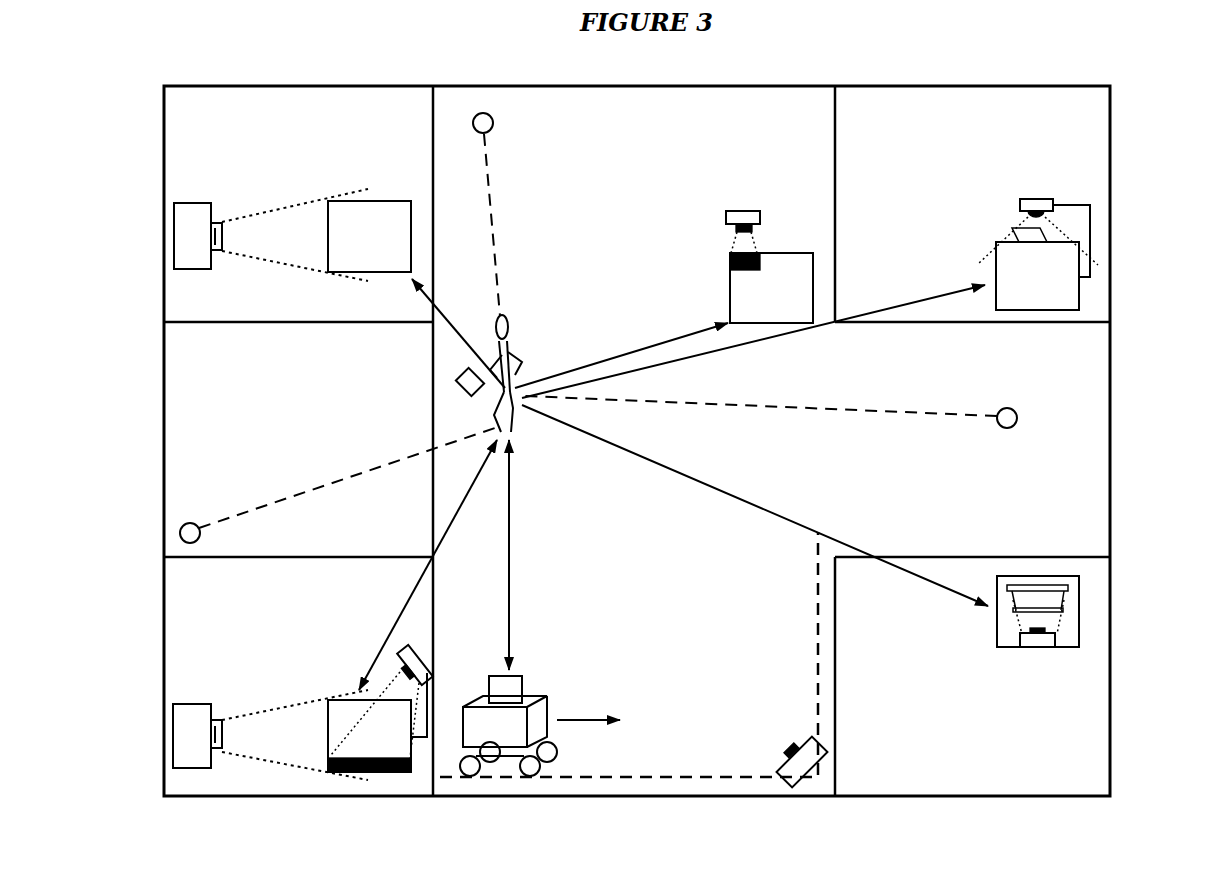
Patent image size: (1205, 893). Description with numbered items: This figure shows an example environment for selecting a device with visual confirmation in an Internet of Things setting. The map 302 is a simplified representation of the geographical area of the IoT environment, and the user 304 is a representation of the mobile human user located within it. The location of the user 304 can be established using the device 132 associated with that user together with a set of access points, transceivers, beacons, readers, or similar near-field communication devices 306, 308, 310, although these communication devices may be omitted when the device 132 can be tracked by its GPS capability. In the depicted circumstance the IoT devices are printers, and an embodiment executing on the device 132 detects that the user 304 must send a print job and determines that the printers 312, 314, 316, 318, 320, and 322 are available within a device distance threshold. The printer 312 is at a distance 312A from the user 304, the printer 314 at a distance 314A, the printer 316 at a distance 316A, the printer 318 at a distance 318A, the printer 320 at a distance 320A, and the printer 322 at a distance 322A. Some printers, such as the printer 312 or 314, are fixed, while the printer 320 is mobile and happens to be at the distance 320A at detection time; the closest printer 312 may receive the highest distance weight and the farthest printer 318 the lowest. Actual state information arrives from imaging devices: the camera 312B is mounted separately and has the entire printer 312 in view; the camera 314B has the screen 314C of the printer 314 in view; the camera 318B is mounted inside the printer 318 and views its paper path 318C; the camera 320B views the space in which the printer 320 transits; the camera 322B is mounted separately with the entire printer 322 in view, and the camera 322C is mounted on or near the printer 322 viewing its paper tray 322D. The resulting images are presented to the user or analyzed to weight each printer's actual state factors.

The map 302 is at (1076, 86).
The user 304 is at (508, 340).
The device 132 is at (463, 378).
The near-field communication device 306 is at (493, 123).
The near-field communication device 308 is at (185, 525).
The near-field communication device 310 is at (1017, 416).
The printer 312 is at (369, 236).
The distance 312A is at (458, 333).
The camera 312B is at (192, 207).
The printer 314 is at (771, 288).
The distance 314A is at (621, 355).
The camera 314B is at (750, 215).
The screen 314C is at (730, 262).
The printer 316 is at (1043, 257).
The distance 316A is at (753, 341).
The printer 318 is at (998, 636).
The distance 318A is at (755, 505).
The camera 318B is at (1043, 645).
The paper path 318C is at (1070, 598).
The printer 320 is at (540, 726).
The distance 320A is at (511, 555).
The camera 320B is at (800, 752).
The printer 322 is at (328, 745).
The distance 322A is at (428, 565).
The camera 322B is at (195, 708).
The camera 322C is at (383, 772).
The paper tray 322D is at (398, 654).